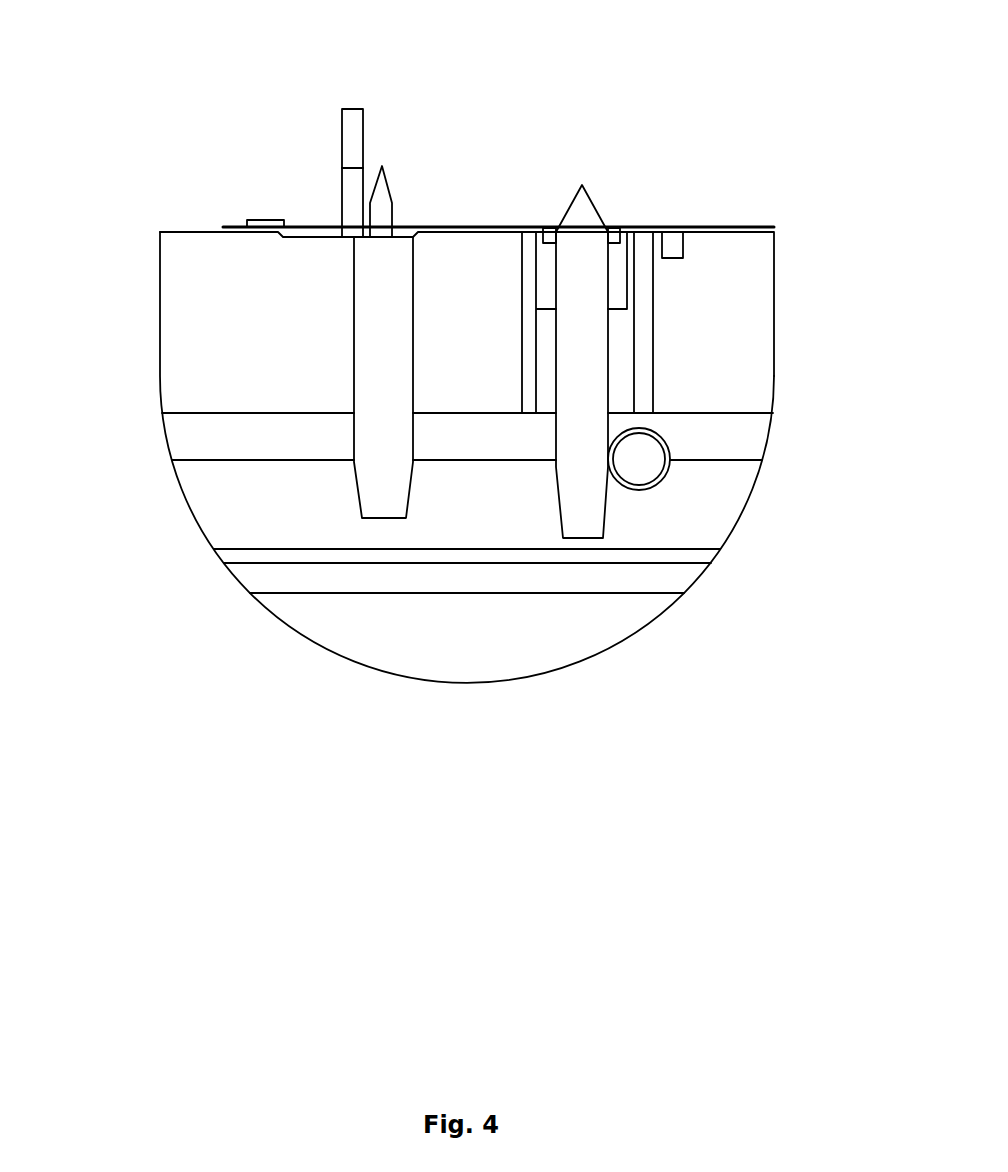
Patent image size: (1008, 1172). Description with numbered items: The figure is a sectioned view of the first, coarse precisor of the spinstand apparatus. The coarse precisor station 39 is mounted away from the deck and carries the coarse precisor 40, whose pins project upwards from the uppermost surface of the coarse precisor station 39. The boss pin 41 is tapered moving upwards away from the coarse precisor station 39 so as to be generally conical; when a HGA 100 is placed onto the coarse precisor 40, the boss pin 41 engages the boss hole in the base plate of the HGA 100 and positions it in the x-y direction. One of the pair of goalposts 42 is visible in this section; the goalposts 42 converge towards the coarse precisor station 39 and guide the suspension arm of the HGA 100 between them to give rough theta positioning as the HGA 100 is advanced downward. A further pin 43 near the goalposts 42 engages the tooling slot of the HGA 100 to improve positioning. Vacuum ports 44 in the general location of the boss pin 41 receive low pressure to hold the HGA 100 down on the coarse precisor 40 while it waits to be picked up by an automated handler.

The coarse precisor station 39 is at (115, 194).
The coarse precisor 40 is at (573, 133).
The boss pin 41 is at (580, 213).
The goalposts 42 is at (352, 137).
The further pin 43 is at (380, 202).
The vacuum ports 44 is at (523, 347).
The HGA 100 is at (722, 222).